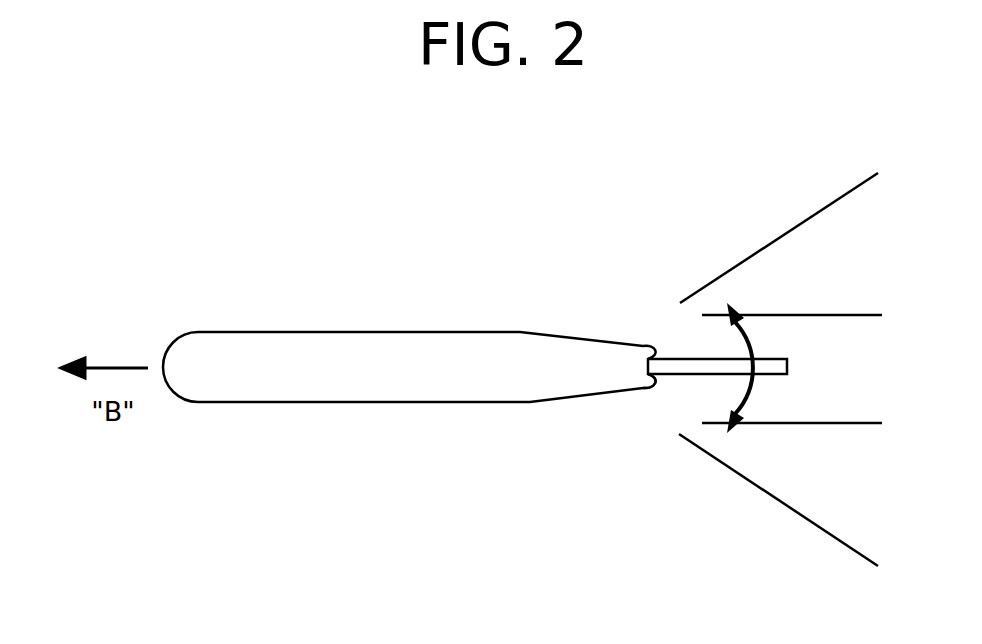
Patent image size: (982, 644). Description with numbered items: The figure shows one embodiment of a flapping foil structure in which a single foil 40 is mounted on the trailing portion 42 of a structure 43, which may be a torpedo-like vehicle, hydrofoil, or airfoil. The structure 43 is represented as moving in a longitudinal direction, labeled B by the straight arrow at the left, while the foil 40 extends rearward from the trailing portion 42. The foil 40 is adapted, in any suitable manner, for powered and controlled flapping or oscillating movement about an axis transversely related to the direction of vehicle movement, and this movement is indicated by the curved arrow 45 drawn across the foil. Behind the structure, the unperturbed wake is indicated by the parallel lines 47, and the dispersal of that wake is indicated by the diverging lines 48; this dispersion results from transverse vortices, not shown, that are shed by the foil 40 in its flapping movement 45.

The foil 40 is at (789, 370).
The trailing portion 42 is at (632, 380).
The structure 43 is at (314, 391).
The curved arrow 45 is at (746, 404).
The unperturbed wake 47 is at (848, 315).
The dispersed wake 48 is at (768, 245).